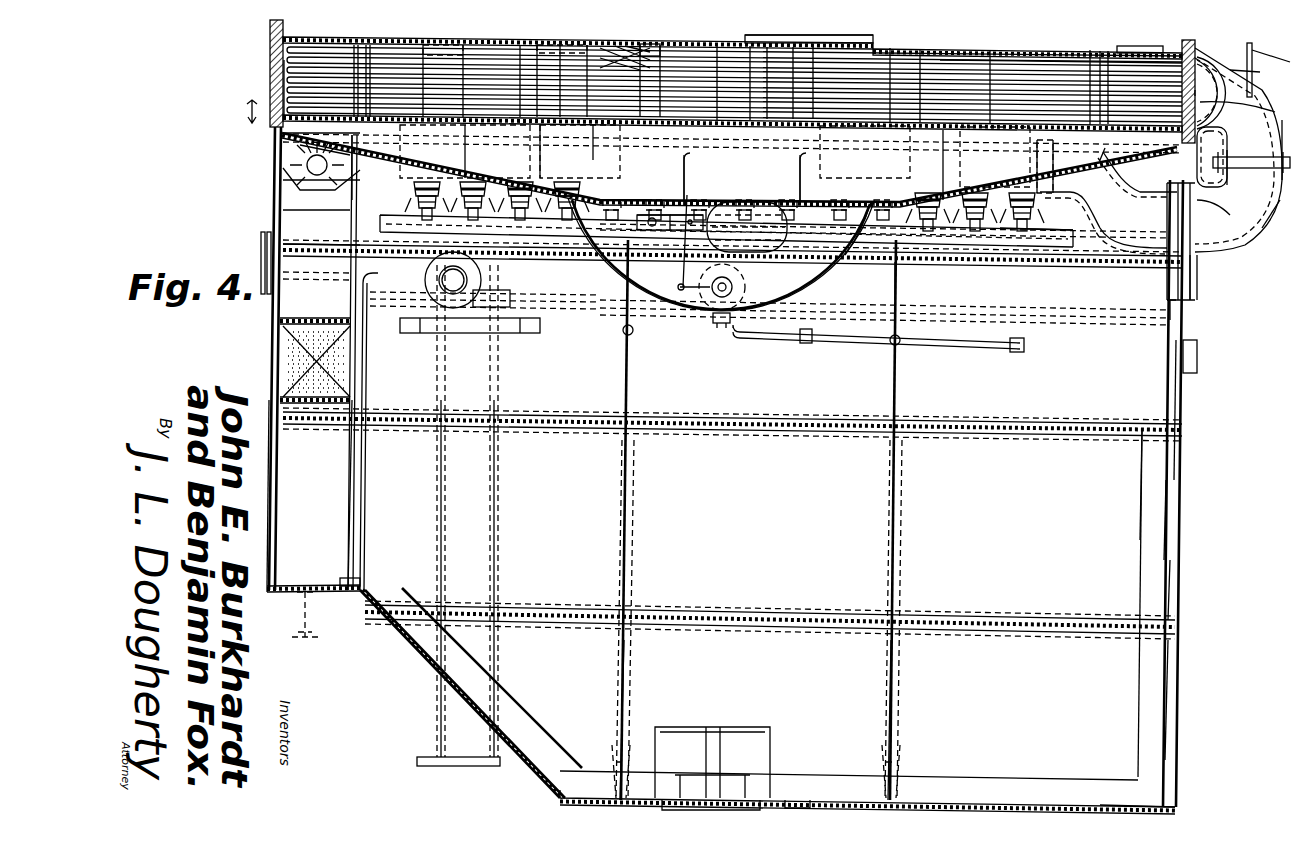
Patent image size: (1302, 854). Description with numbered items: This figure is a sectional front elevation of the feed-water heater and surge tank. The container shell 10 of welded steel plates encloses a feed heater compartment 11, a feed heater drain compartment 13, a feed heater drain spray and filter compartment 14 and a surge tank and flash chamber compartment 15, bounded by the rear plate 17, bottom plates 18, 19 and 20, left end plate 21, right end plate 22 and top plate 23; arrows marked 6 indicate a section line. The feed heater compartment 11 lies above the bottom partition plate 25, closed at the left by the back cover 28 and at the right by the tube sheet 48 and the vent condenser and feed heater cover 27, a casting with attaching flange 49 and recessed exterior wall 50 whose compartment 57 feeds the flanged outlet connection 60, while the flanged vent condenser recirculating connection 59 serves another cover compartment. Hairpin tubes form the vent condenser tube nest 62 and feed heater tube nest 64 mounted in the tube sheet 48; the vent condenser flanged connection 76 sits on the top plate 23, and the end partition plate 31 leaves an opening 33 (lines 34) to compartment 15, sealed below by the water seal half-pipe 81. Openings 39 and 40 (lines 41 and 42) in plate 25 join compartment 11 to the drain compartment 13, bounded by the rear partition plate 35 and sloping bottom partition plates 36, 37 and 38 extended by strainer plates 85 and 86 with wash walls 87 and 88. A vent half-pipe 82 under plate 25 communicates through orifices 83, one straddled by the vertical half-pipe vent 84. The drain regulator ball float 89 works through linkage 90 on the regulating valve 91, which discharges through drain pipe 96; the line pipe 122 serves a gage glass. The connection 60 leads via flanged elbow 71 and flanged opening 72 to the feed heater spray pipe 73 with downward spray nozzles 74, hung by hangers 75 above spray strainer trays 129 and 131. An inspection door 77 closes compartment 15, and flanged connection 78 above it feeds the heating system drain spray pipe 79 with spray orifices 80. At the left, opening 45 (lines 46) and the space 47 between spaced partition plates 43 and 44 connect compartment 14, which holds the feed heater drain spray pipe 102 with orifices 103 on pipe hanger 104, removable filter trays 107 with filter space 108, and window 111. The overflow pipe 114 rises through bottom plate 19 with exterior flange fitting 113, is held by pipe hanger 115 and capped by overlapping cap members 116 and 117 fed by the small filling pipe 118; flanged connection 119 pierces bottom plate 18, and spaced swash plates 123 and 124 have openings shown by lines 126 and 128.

The inclined plate 6 is at (270, 133).
The container shell 10 is at (1166, 685).
The feed heater compartment 11 is at (950, 85).
The feed heater drain compartment 13 is at (300, 136).
The feed heater drain spray and filter compartment 14 is at (296, 215).
The surge tank and flash chamber compartment 15 is at (1120, 518).
The rear plate 17 is at (1120, 478).
The bottom plate 18 is at (1150, 810).
The bottom plate 19 is at (420, 650).
The bottom plate 20 is at (290, 594).
The left end plate 21 is at (274, 248).
The right end plate 22 is at (1170, 575).
The top plate 23 is at (995, 70).
The bottom partition plate 25 is at (890, 85).
The vent condenser and feed heater cover 27 is at (1240, 90).
The back cover 28 is at (270, 48).
The end partition plate 31 is at (645, 60).
The opening 33 is at (720, 60).
The crossed dot-and-dash lines 34 is at (752, 60).
The rear partition plate 35 is at (400, 150).
The bottom partition plate 36 is at (305, 167).
The bottom partition plate 37 is at (700, 322).
The bottom partition plate 38 is at (1125, 172).
The opening 39 is at (252, 100).
The opening 40 is at (1210, 93).
The crossed dot-and-dash lines 41 is at (282, 95).
The crossed dot-and-dash lines 42 is at (1105, 65).
The spaced partition plate 43 is at (356, 478).
The spaced partition plate 44 is at (362, 565).
The opening 45 is at (388, 65).
The crossed dot-and-dash lines 46 is at (356, 60).
The space 47 is at (368, 508).
The tube sheet 48 is at (1247, 50).
The attaching flange 49 is at (1271, 48).
The exterior wall 50 is at (1243, 91).
The compartment 57 is at (1250, 157).
The flanged vent condenser recirculating connection 59 is at (1255, 70).
The flanged outlet connection 60 is at (1250, 150).
The vent condenser tube nest 62 is at (943, 140).
The feed heater tube nest 64 is at (558, 60).
The flanged elbow 71 is at (1270, 228).
The flanged opening 72 is at (1200, 250).
The feed heater spray pipe 73 is at (1150, 240).
The spray nozzles 74 is at (745, 198).
The hangers 75 is at (1037, 185).
The vent condenser flanged connection 76 is at (1140, 41).
The inspection door 77 is at (1184, 420).
The flanged connection 78 is at (1224, 200).
The heating system drain spray pipe 79 is at (1158, 198).
The spray orifices 80 is at (1030, 207).
The water seal half-pipe 81 is at (705, 198).
The vent half-pipe 82 is at (700, 213).
The orifices 83 is at (705, 216).
The vertical half-pipe vent 84 is at (825, 36).
The strainer plate 85 is at (612, 198).
The strainer plate 86 is at (845, 200).
The vertical plate 87 is at (682, 165).
The vertical plate 88 is at (806, 165).
The drain regulator ball float 89 is at (866, 250).
The linkage 90 is at (676, 283).
The automatic and manually operated regulating valve 91 is at (745, 287).
The drain pipe 96 is at (570, 300).
The feed heater drain spray pipe 102 is at (300, 188).
The spray orifices 103 is at (310, 143).
The pipe hanger 104 is at (296, 195).
The removable filter trays 107 is at (292, 330).
The crossed lines 108 is at (300, 380).
The window 111 is at (262, 296).
The exterior flange fitting 113 is at (420, 768).
The overflow pipe 114 is at (485, 560).
The pipe hanger 115 is at (510, 340).
The cap member 116 is at (560, 140).
The cap member 117 is at (466, 134).
The filling pipe 118 is at (600, 142).
The flanged connection 119 is at (768, 795).
The line pipe 122 is at (865, 350).
The swash plate 123 is at (625, 690).
The swash plate 124 is at (888, 686).
The crossed dot-and-dash lines 126 is at (614, 745).
The crossed dot-and-dash lines 128 is at (632, 480).
The spray strainer tray 129 is at (414, 200).
The spray strainer tray 131 is at (1070, 240).